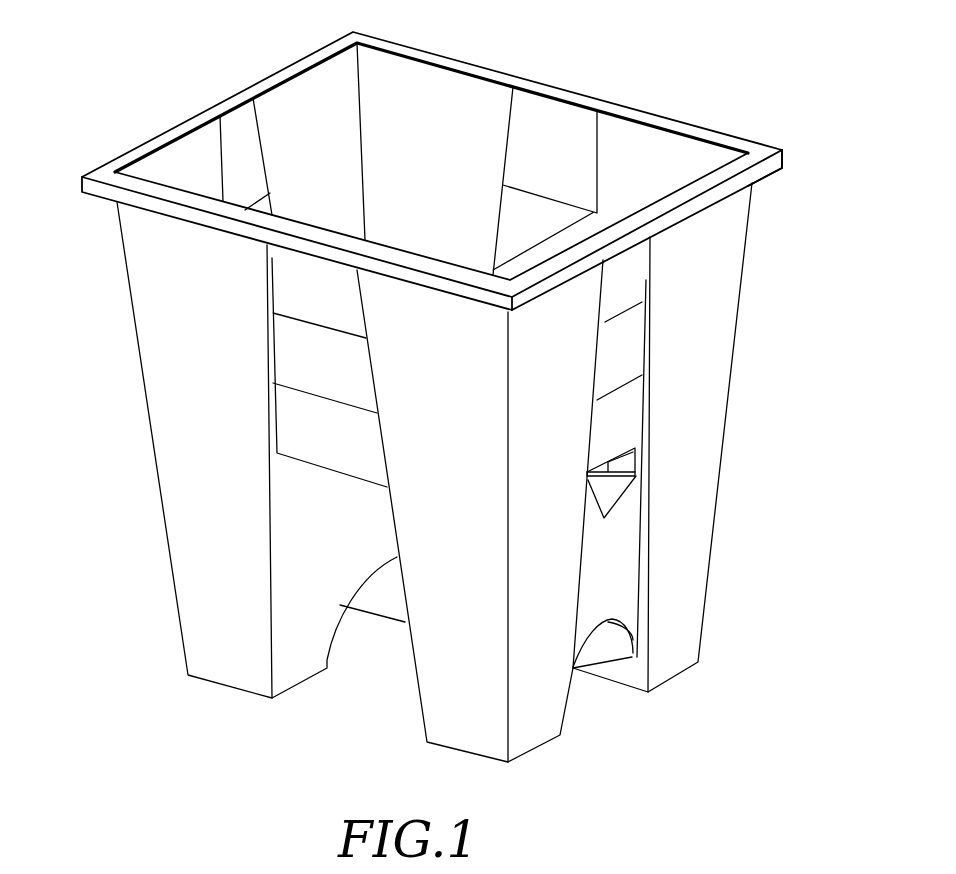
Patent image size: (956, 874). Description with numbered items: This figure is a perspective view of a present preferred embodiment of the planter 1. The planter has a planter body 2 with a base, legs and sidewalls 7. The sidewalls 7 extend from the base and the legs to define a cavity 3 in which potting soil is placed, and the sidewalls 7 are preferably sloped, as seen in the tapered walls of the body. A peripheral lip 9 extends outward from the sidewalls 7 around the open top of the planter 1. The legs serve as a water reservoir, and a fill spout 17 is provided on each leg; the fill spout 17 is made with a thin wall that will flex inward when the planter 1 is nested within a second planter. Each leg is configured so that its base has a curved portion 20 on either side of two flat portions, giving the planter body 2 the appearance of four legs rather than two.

The planter 1 is at (222, 83).
The planter body 2 is at (170, 353).
The cavity 3 is at (440, 88).
The sidewalls 7 is at (680, 152).
The peripheral lip 9 is at (782, 170).
The fill spout 17 is at (624, 494).
The curved portion 20 is at (634, 640).